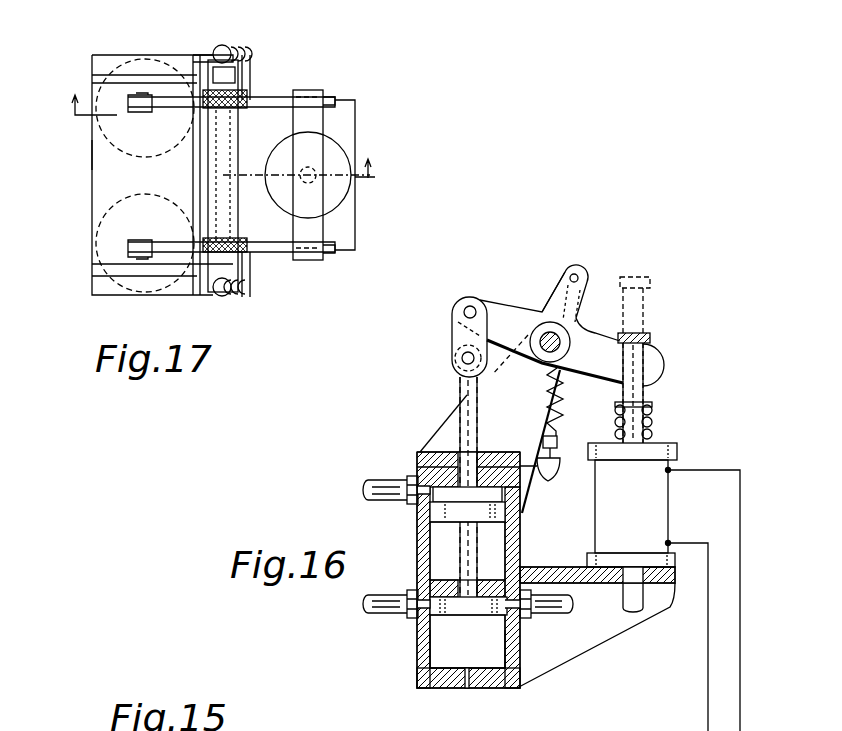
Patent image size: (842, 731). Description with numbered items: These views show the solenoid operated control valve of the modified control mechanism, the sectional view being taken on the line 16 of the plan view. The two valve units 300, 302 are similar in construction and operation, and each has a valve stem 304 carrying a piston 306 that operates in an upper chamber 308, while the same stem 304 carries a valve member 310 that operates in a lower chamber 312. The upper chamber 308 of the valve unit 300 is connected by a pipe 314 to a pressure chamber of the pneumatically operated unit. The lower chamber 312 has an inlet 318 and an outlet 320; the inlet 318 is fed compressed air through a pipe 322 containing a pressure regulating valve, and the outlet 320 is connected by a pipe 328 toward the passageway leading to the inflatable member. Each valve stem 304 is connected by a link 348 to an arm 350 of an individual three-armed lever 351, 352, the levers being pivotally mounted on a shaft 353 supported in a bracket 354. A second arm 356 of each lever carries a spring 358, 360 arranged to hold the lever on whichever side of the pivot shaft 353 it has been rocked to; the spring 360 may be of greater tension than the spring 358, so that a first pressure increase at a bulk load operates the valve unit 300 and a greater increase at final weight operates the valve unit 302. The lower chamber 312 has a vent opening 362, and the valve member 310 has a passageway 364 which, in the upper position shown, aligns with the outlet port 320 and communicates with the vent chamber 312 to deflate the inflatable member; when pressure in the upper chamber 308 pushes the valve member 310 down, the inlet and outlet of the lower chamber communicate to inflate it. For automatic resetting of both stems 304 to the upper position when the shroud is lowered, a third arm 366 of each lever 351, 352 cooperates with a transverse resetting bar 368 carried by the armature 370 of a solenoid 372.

In FIG. 17, the section line 16 is at (214, 142).
In FIG. 17, the valve unit 300 is at (107, 72).
In FIG. 16, the valve unit 300 is at (415, 468).
In FIG. 17, the valve unit 302 is at (103, 206).
In FIG. 16, the valve stem 304 is at (456, 396).
In FIG. 16, the piston 306 is at (503, 512).
In FIG. 16, the upper chamber 308 is at (443, 535).
In FIG. 16, the valve member 310 is at (485, 612).
In FIG. 16, the lower chamber 312 is at (440, 655).
In FIG. 16, the pipe 314 is at (383, 480).
In FIG. 16, the inlet 318 is at (510, 583).
In FIG. 16, the outlet 320 is at (418, 586).
In FIG. 16, the pipe 322 is at (548, 613).
In FIG. 16, the pipe 328 is at (392, 612).
In FIG. 16, the link 348 is at (452, 327).
In FIG. 16, the arm 350 is at (512, 300).
In FIG. 17, the three-armed lever 351 is at (178, 92).
In FIG. 16, the three-armed lever 351 is at (532, 283).
In FIG. 17, the three-armed lever 352 is at (178, 255).
In FIG. 17, the shaft 353 is at (230, 212).
In FIG. 16, the shaft 353 is at (546, 355).
In FIG. 17, the bracket 354 is at (92, 155).
In FIG. 16, the bracket 354 is at (443, 433).
In FIG. 16, the second arm 356 is at (572, 268).
In FIG. 17, the spring 358 is at (255, 32).
In FIG. 16, the spring 358 is at (612, 412).
In FIG. 17, the spring 360 is at (235, 297).
In FIG. 16, the vent opening 362 is at (468, 688).
In FIG. 16, the passageway 364 is at (448, 607).
In FIG. 16, the third arm 366 is at (655, 362).
In FIG. 17, the transverse resetting bar 368 is at (320, 122).
In FIG. 16, the transverse resetting bar 368 is at (652, 333).
In FIG. 16, the armature 370 is at (632, 381).
In FIG. 17, the solenoid 372 is at (342, 200).
In FIG. 16, the solenoid 372 is at (660, 507).